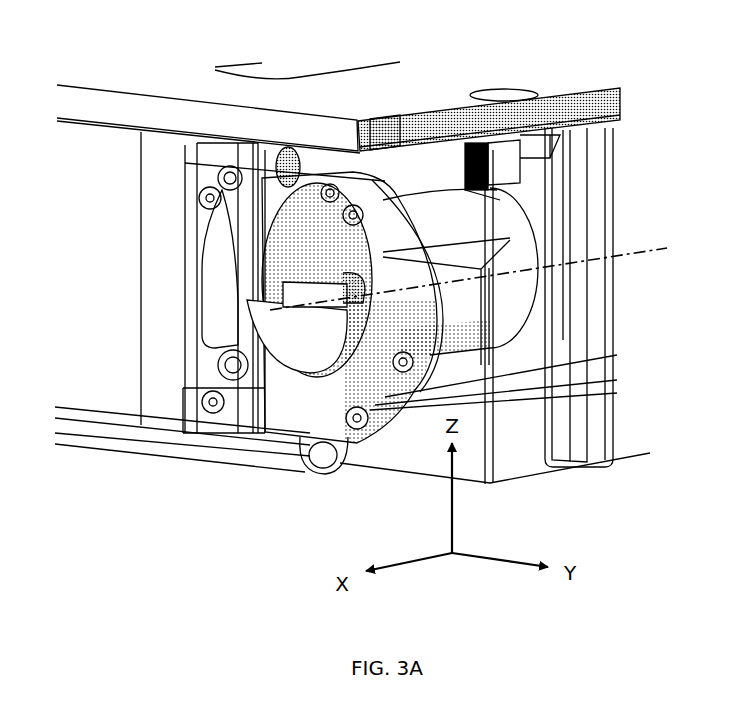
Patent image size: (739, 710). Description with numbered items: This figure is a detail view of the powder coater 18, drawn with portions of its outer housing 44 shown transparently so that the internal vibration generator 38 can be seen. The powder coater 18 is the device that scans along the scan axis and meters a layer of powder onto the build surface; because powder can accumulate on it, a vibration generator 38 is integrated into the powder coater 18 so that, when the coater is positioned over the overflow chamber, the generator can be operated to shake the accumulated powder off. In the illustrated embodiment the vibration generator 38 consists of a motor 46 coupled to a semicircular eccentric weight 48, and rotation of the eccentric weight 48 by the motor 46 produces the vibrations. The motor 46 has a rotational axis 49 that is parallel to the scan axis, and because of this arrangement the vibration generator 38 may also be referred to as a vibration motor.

The powder coater 18 is at (207, 118).
The vibration generator 38 is at (406, 178).
The outer housing 44 is at (522, 443).
The motor 46 is at (491, 256).
The semicircular eccentric weight 48 is at (277, 328).
The rotational axis 49 is at (627, 258).